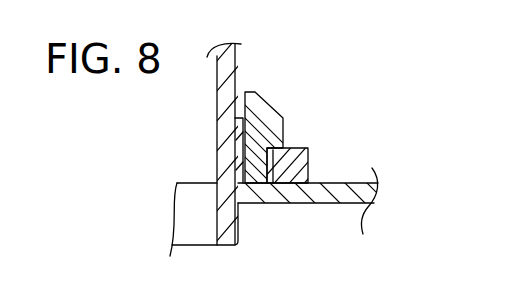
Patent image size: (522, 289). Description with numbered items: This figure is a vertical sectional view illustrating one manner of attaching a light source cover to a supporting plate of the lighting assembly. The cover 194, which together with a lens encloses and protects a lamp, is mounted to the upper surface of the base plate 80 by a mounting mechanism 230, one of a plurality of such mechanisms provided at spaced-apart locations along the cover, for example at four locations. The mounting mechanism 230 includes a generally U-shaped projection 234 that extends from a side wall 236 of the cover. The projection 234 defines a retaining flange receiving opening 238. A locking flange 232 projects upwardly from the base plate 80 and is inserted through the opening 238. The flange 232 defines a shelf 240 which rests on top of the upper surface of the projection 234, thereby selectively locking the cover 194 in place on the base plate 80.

The cover 194 is at (216, 86).
The base plate 80 is at (337, 210).
The retaining flange receiving opening 238 is at (240, 162).
The mounting mechanism 230 is at (334, 125).
The locking flange 232 is at (334, 125).
The side wall 236 is at (262, 108).
The U-shaped projection 234 is at (308, 150).
The shelf 240 is at (273, 183).